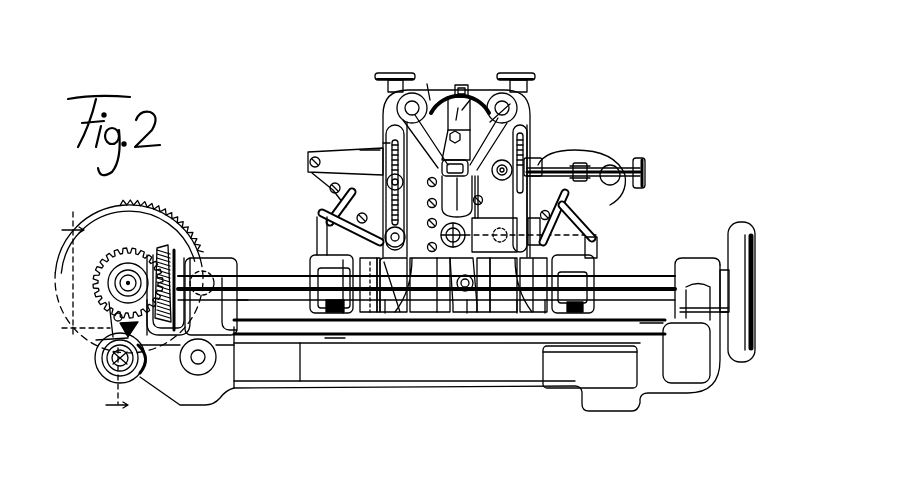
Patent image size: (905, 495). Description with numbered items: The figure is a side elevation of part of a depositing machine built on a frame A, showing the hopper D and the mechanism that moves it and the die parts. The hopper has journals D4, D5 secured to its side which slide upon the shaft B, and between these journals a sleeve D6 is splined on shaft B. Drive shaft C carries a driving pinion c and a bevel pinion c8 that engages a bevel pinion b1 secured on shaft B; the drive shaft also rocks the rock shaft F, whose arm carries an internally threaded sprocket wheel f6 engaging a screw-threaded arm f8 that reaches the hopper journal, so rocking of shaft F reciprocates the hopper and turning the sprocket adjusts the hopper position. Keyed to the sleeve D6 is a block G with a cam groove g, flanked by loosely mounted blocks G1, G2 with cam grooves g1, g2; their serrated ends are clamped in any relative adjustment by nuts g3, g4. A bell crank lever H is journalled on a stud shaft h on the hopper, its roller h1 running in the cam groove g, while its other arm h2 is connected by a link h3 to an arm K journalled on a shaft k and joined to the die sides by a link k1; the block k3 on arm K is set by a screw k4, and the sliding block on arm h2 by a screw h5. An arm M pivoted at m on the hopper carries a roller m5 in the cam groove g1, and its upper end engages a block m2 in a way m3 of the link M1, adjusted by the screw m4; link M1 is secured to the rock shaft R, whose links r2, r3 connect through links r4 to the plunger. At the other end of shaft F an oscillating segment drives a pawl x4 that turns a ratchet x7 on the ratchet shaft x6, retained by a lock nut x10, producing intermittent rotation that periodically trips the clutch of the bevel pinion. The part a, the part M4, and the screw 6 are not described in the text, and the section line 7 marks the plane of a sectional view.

The frame A is at (643, 388).
The bearing block a is at (695, 270).
The shaft B is at (640, 282).
The drive shaft C is at (128, 283).
The driving pinion c is at (147, 233).
The bevel pinion c8 is at (108, 256).
The bevel pinion b1 is at (171, 250).
The section line 7 is at (95, 318).
The pawl x4 is at (95, 336).
The ratchet shaft x6 is at (115, 370).
The ratchet x7 is at (110, 362).
The lock nut x10 is at (135, 385).
The rock shaft F is at (216, 357).
The sprocket wheel f6 is at (237, 312).
The screw-threaded arm f8 is at (325, 338).
The hopper D is at (308, 165).
The journal D4 is at (320, 343).
The journal D5 is at (598, 313).
The sleeve D6 is at (556, 341).
The arm M is at (348, 247).
The link M1 is at (383, 108).
The thumb screw M4 is at (395, 74).
The pivot m is at (345, 224).
The block m2 is at (332, 190).
The way m3 is at (385, 143).
The adjusting screw m4 is at (383, 163).
The roller m5 is at (385, 340).
The rock shaft R is at (447, 100).
The link r3 is at (427, 84).
The link r4 is at (470, 100).
The link r2 is at (458, 108).
The bell crank lever H is at (510, 104).
The stud shaft h is at (450, 160).
The roller h1 is at (450, 343).
The arm h2 is at (540, 160).
The link h3 is at (537, 153).
The screw h5 is at (597, 212).
The arm K is at (563, 162).
The shaft k is at (612, 165).
The link k1 is at (387, 157).
The adjustable block k3 is at (566, 123).
The screw k4 is at (638, 160).
The screw 6 is at (514, 214).
The block G is at (433, 343).
The block G1 is at (400, 343).
The block G2 is at (490, 343).
The cam groove g is at (467, 343).
The cam groove g1 is at (377, 343).
The cam groove g2 is at (517, 343).
The nut g3 is at (340, 347).
The nut g4 is at (548, 343).